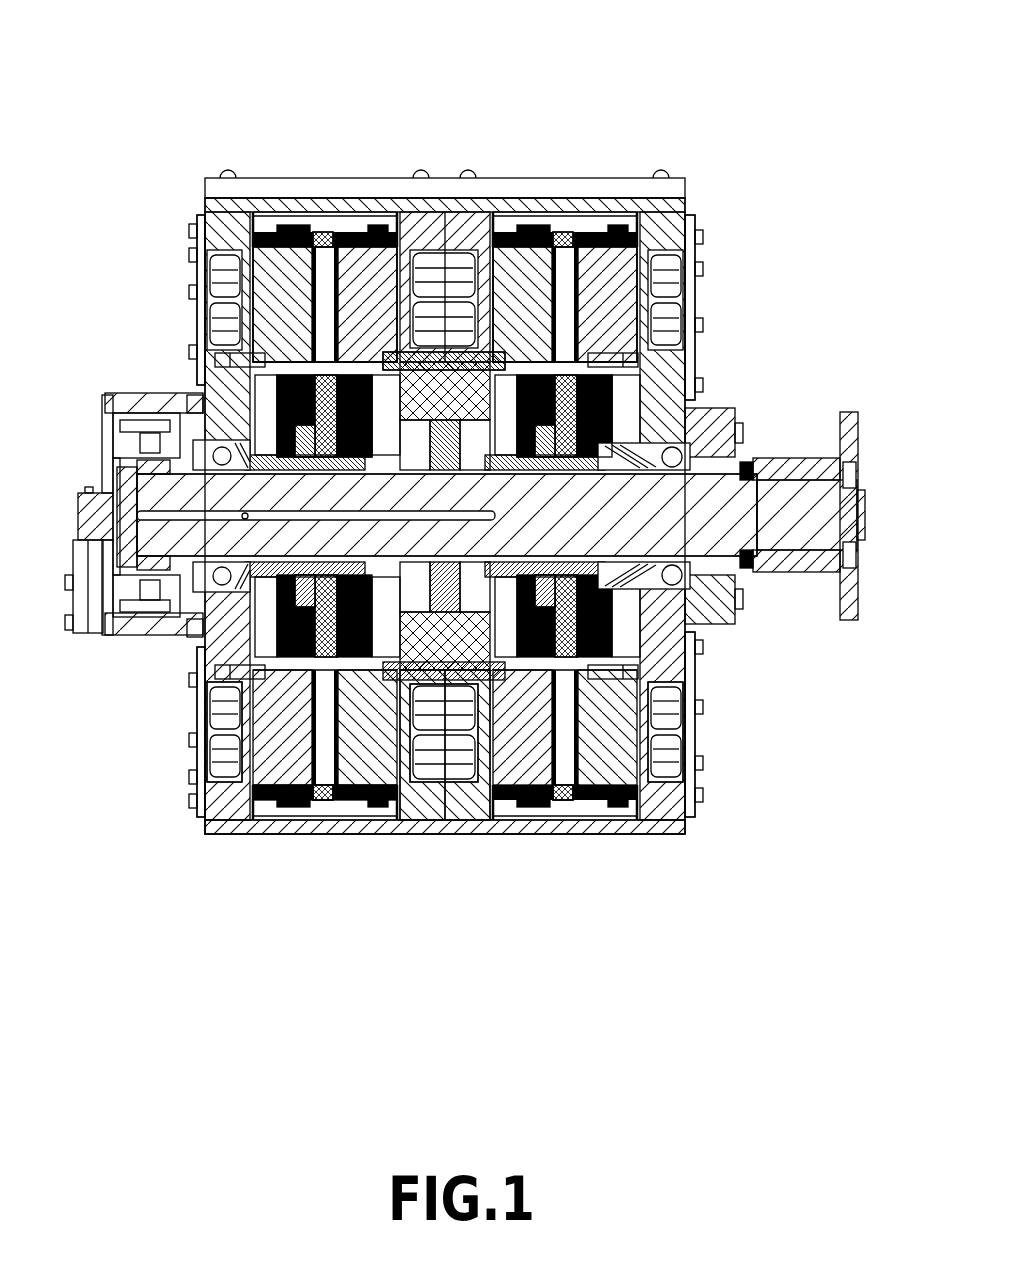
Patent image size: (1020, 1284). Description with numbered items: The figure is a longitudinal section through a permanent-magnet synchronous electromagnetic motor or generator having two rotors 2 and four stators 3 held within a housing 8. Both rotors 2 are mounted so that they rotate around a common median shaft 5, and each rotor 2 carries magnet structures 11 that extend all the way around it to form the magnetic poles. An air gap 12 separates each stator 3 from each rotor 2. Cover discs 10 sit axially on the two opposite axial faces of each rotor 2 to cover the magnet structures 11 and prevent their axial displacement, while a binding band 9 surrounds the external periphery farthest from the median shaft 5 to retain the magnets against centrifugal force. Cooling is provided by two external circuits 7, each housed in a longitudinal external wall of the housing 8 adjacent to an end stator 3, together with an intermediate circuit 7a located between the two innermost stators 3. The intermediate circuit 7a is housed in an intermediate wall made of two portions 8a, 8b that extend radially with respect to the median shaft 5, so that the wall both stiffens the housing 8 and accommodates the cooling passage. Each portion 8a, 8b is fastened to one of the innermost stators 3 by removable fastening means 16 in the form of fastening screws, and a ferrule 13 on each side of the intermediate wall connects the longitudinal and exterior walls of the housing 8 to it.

The rotor 2 is at (270, 403).
The stator 3 is at (365, 317).
The median shaft 5 is at (645, 515).
The external circuit 7 is at (223, 707).
The intermediate circuit 7a is at (467, 705).
The housing 8 is at (190, 637).
The intermediate wall portion 8a is at (423, 810).
The intermediate wall portion 8b is at (452, 817).
The binding band 9 is at (325, 807).
The cover disc 10 is at (283, 808).
The magnet structure 11 is at (198, 205).
The air gap 12 is at (763, 63).
The ferrule 13 is at (300, 827).
The removable fastening means 16 is at (490, 348).